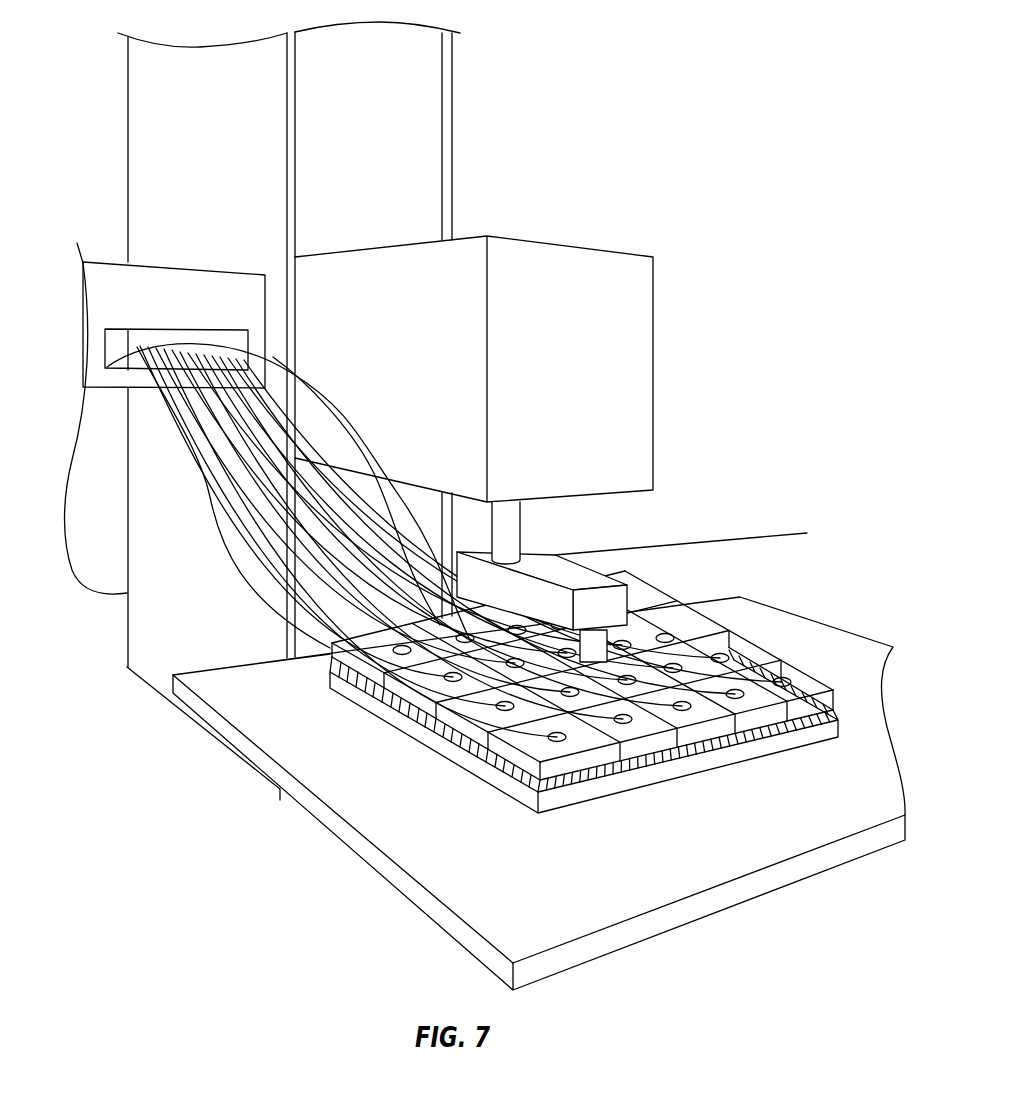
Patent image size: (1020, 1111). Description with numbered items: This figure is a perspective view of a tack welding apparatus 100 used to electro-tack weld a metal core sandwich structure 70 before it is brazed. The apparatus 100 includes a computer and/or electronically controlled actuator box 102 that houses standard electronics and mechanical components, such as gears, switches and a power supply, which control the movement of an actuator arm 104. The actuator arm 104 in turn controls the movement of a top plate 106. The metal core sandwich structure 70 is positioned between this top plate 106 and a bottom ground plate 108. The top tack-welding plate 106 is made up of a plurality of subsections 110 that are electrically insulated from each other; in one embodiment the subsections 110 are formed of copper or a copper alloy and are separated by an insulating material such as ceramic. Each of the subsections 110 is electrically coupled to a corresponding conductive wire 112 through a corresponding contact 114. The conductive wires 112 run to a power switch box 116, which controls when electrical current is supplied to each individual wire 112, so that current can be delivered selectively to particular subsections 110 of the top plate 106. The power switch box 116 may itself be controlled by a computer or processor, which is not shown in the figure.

The tack welding apparatus 100 is at (647, 116).
The actuator box 102 is at (647, 340).
The actuator arm 104 is at (593, 580).
The top plate 106 is at (745, 640).
The bottom ground plate 108 is at (537, 808).
The metal core sandwich structure 70 is at (655, 774).
The subsections 110 is at (776, 720).
The conductive wires 112 is at (203, 521).
The contacts 114 is at (788, 680).
The power switch box 116 is at (115, 349).